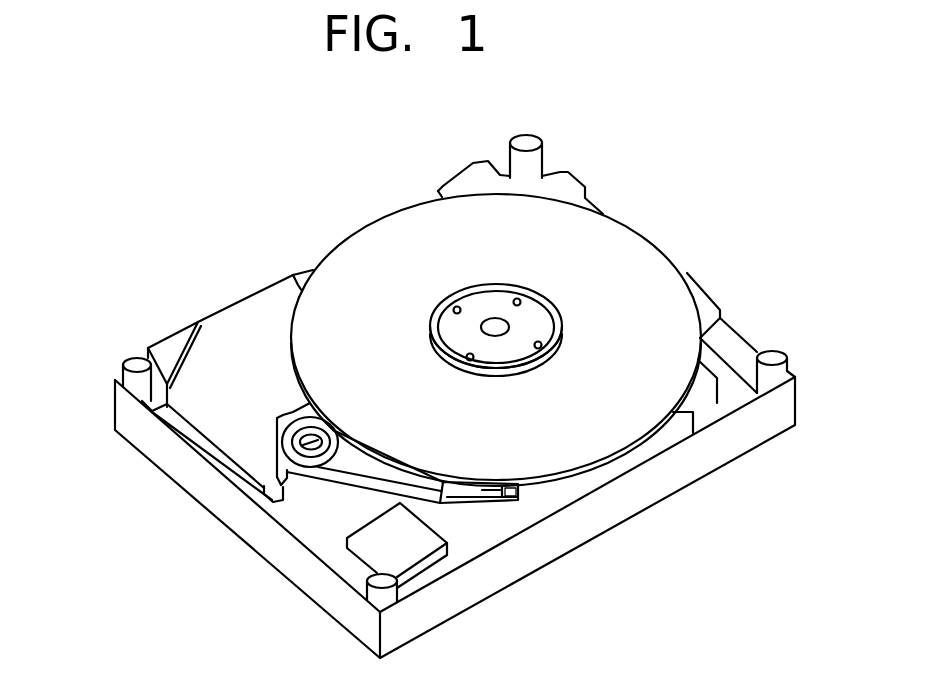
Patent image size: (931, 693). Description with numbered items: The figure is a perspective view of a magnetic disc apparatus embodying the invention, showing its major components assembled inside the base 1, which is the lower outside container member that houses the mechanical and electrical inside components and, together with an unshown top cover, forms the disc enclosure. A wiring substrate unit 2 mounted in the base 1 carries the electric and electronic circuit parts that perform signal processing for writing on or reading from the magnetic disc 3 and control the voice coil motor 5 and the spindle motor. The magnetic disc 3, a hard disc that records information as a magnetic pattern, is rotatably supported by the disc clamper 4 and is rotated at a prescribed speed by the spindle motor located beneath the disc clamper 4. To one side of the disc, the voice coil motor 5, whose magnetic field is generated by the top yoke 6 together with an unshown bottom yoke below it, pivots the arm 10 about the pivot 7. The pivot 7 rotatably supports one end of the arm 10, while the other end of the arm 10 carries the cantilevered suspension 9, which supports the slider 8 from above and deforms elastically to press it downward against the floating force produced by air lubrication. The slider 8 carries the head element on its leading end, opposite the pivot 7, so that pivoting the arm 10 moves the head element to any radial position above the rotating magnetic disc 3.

The base 1 is at (647, 482).
The wiring substrate unit 2 is at (413, 542).
The magnetic disc 3 is at (608, 247).
The disc clamper 4 is at (535, 328).
The voice coil motor 5 is at (253, 393).
The top yoke 6 is at (219, 397).
The pivot 7 is at (300, 443).
The slider 8 is at (520, 485).
The suspension 9 is at (520, 497).
The arm 10 is at (287, 480).